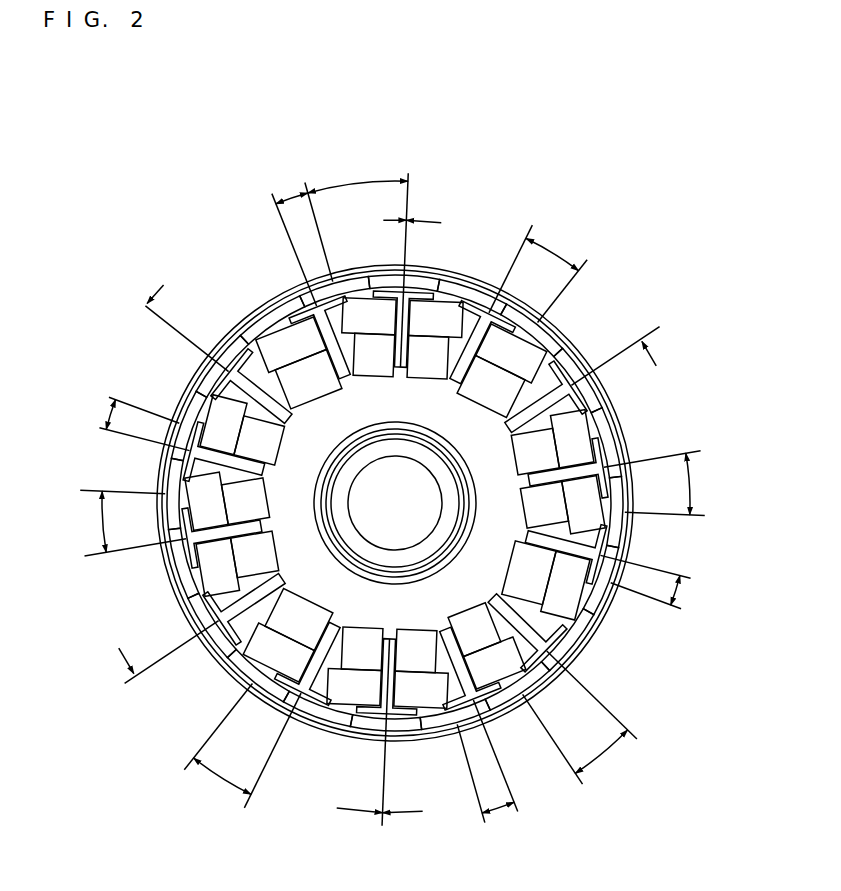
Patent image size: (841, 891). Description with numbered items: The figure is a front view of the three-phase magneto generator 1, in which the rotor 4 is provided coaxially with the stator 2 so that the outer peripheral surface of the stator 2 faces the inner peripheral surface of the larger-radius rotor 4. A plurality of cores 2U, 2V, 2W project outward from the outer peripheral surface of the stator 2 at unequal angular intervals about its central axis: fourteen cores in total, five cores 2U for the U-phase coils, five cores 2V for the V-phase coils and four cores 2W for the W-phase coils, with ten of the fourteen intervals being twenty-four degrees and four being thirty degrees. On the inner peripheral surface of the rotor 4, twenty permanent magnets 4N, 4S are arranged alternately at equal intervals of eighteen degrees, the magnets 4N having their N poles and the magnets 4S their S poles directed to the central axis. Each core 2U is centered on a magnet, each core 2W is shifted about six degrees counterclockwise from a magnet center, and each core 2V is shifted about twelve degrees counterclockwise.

The three-phase magneto generator 1 is at (678, 151).
The stator 2 is at (310, 465).
The rotor 4 is at (460, 265).
The core 2U is at (395, 502).
The core 2V is at (395, 503).
The core 2W is at (395, 502).
The permanent magnet 4N is at (392, 511).
The permanent magnet 4S is at (394, 503).